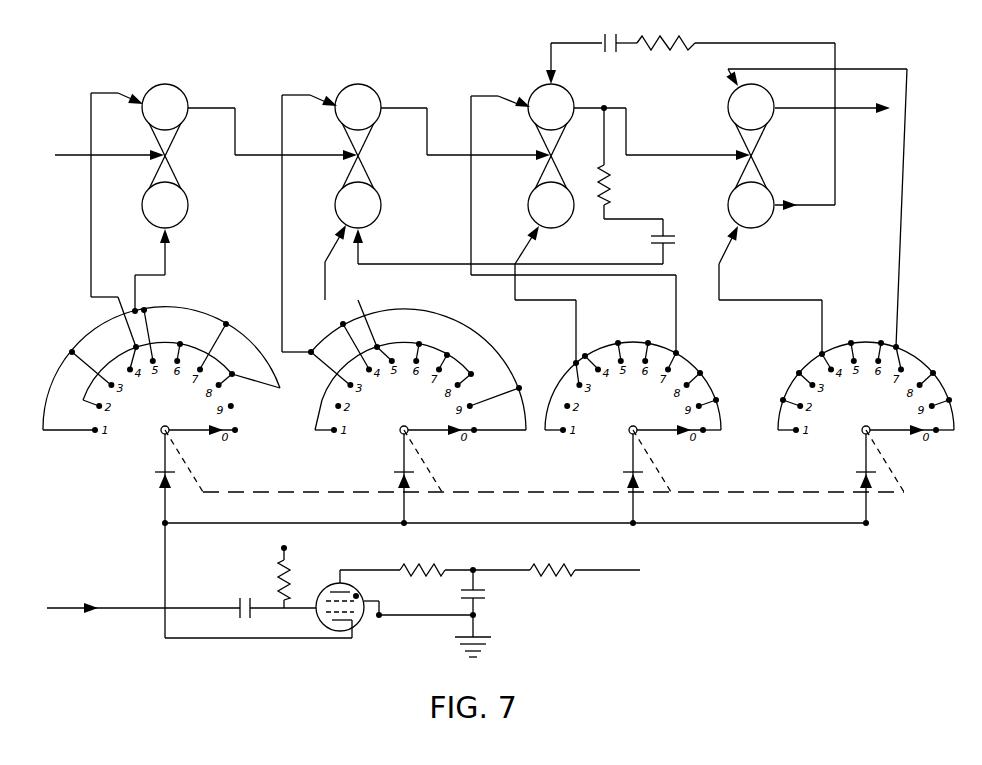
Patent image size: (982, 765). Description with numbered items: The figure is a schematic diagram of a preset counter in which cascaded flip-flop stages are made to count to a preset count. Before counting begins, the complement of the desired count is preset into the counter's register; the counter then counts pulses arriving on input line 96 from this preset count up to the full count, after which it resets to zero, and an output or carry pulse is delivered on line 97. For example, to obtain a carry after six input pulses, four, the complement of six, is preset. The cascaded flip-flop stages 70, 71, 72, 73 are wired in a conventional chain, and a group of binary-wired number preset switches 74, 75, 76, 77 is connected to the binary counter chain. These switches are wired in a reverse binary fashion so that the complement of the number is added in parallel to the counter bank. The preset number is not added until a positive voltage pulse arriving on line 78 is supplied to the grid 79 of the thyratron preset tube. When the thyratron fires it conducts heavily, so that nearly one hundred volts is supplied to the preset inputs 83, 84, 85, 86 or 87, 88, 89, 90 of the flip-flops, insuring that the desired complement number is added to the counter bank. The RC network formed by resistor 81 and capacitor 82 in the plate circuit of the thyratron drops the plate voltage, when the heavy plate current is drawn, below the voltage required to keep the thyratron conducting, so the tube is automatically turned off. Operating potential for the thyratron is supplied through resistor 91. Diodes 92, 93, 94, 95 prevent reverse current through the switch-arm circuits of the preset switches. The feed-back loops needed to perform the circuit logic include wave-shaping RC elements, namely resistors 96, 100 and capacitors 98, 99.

The flip-flop stage 70 is at (182, 160).
The flip-flop stage 71 is at (370, 160).
The flip-flop stage 72 is at (560, 156).
The flip-flop stage 73 is at (762, 156).
The number preset switch 74 is at (162, 432).
The number preset switch 75 is at (380, 459).
The number preset switch 76 is at (612, 464).
The number preset switch 77 is at (845, 464).
The line 78 is at (127, 607).
The grid 79 is at (318, 614).
The resistor 81 is at (440, 566).
The capacitor 82 is at (487, 600).
The preset input 83 is at (118, 89).
The preset input 84 is at (310, 91).
The preset input 85 is at (500, 92).
The preset input 86 is at (750, 66).
The preset input 87 is at (167, 265).
The preset input 88 is at (327, 280).
The preset input 89 is at (538, 300).
The preset input 90 is at (790, 302).
The resistor 91 is at (568, 566).
The diode 92 is at (163, 486).
The diode 93 is at (407, 486).
The diode 94 is at (636, 486).
The diode 95 is at (869, 486).
The input line / resistor 96 is at (78, 156).
The output line 97 is at (848, 112).
The capacitor 98 is at (675, 240).
The capacitor 99 is at (600, 38).
The resistor 100 is at (610, 190).